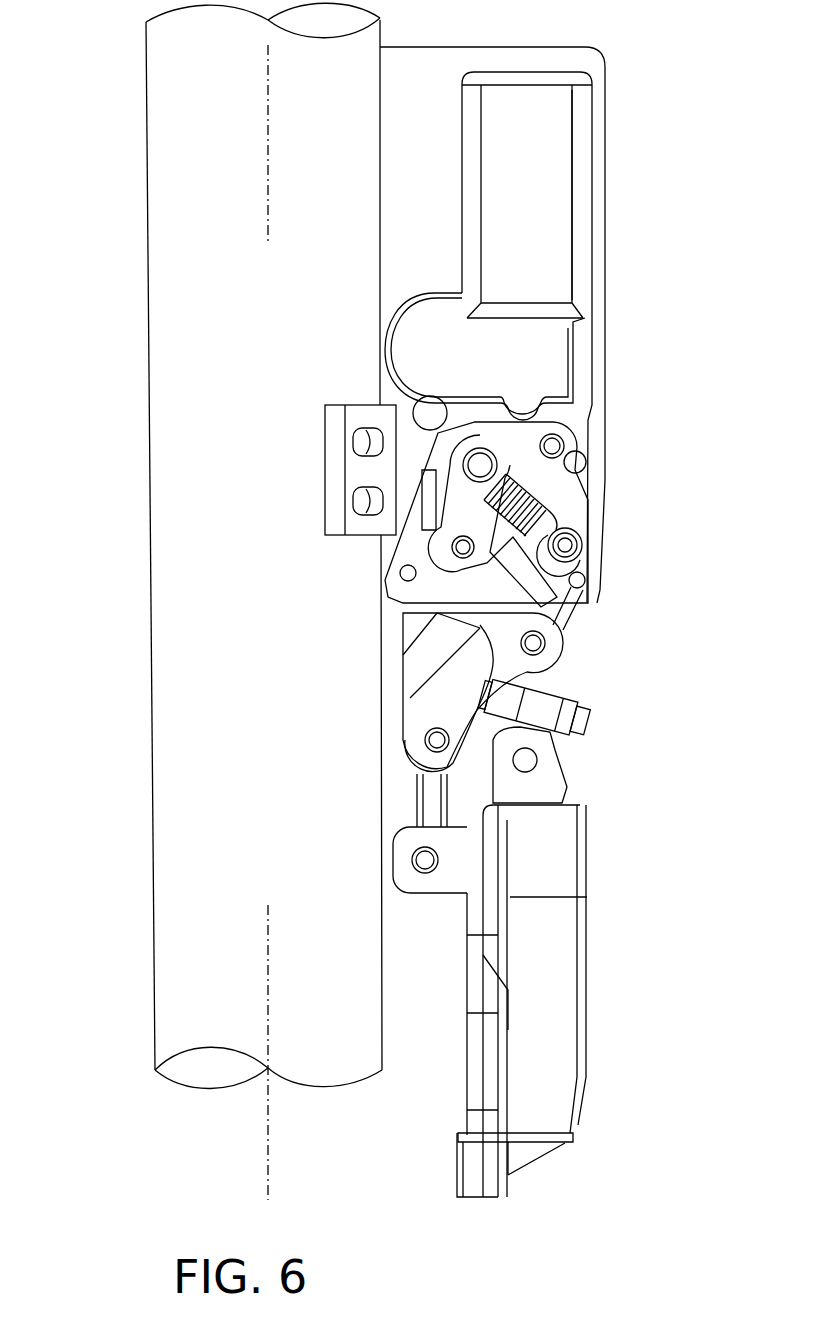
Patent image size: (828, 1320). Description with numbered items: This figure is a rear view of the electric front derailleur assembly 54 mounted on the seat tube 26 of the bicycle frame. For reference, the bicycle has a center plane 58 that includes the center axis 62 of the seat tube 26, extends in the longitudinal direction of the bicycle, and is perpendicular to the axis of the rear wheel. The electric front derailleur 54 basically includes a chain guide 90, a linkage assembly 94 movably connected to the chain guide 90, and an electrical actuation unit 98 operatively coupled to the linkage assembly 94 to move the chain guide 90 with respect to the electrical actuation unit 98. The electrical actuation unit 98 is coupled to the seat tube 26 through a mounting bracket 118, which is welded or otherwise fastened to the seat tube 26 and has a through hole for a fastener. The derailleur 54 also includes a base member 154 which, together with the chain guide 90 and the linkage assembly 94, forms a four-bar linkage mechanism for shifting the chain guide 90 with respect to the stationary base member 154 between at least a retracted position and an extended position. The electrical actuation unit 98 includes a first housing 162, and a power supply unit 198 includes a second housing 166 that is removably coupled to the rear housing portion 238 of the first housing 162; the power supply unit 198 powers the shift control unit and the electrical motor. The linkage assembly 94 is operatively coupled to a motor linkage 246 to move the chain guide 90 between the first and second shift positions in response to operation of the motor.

The seat tube 26 is at (165, 250).
The center plane 58 is at (267, 190).
The center axis 62 is at (268, 1115).
The rear housing portion 238 is at (442, 70).
The electrical actuation unit 98 is at (647, 172).
The first housing 162 is at (522, 78).
The second housing 166 is at (582, 95).
The power supply unit 198 is at (582, 265).
The mounting bracket 118 is at (330, 515).
The motor linkage 246 is at (647, 488).
The electric front derailleur assembly 54 is at (273, 630).
The base member 154 is at (430, 707).
The linkage assembly 94 is at (647, 775).
The chain guide 90 is at (585, 1000).